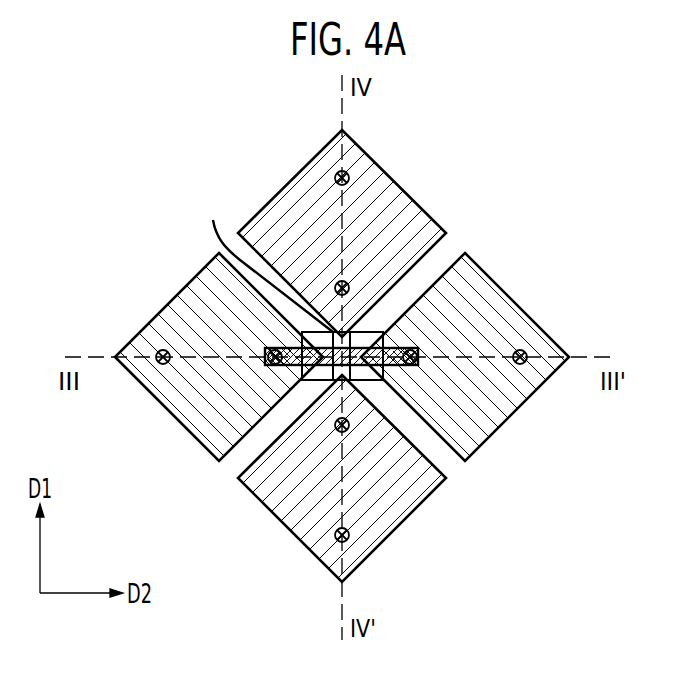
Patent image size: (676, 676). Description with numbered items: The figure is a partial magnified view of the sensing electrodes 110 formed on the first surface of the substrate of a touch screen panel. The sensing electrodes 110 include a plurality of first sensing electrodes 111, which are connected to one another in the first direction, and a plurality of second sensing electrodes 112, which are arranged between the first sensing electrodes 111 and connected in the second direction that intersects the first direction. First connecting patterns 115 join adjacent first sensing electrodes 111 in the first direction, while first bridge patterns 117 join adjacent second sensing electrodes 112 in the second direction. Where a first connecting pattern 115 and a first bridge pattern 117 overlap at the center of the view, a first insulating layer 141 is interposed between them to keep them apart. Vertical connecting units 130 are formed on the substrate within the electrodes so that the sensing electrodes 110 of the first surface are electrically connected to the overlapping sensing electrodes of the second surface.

The sensing electrodes 110 is at (568, 139).
The first sensing electrodes 111 is at (414, 218).
The second sensing electrodes 112 is at (475, 292).
The first connecting patterns 115 is at (372, 381).
The first bridge patterns 117 is at (264, 262).
The vertical connecting units 130 is at (163, 366).
The first insulating layer 141 is at (333, 381).